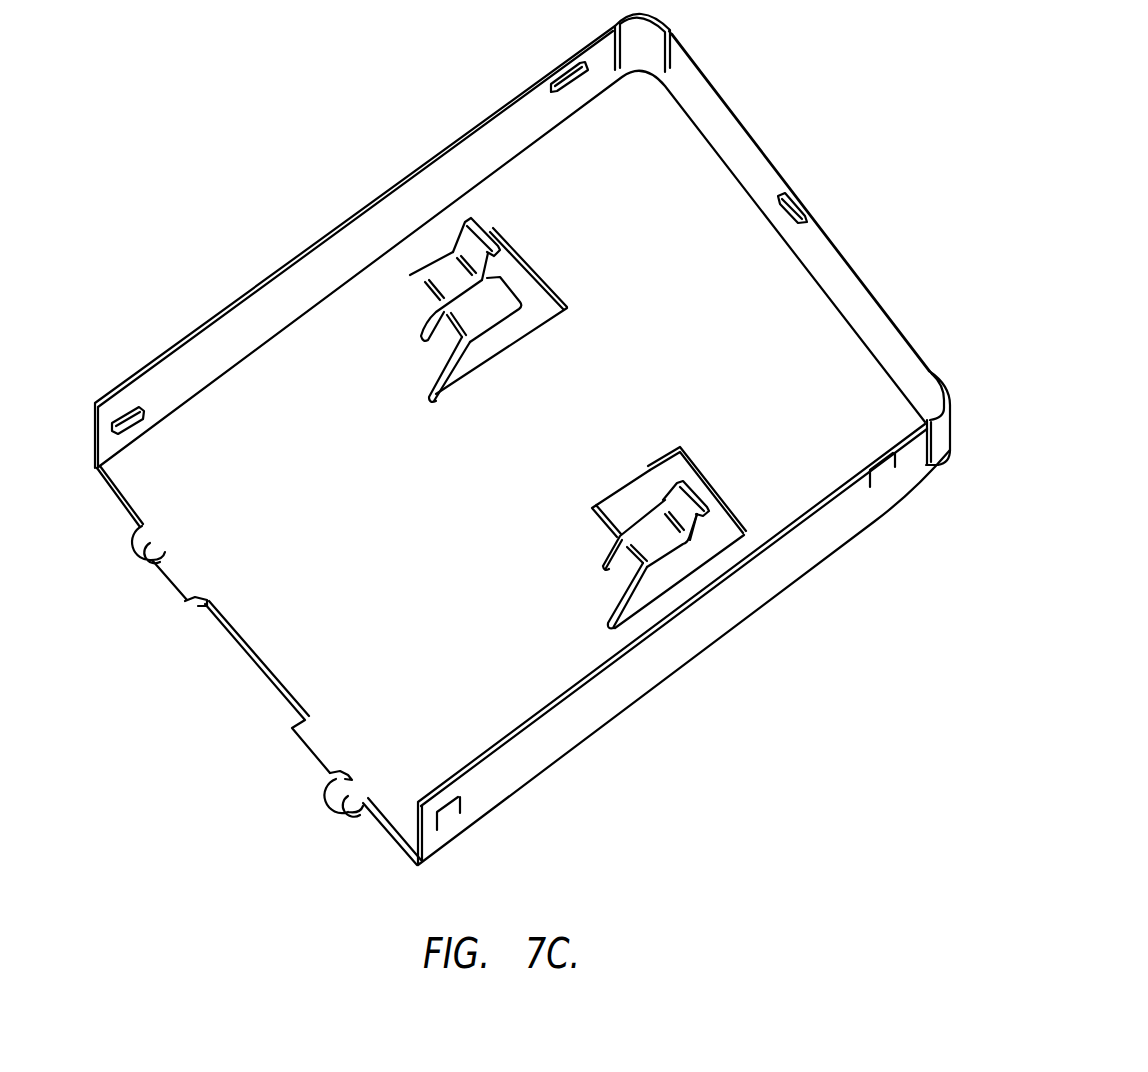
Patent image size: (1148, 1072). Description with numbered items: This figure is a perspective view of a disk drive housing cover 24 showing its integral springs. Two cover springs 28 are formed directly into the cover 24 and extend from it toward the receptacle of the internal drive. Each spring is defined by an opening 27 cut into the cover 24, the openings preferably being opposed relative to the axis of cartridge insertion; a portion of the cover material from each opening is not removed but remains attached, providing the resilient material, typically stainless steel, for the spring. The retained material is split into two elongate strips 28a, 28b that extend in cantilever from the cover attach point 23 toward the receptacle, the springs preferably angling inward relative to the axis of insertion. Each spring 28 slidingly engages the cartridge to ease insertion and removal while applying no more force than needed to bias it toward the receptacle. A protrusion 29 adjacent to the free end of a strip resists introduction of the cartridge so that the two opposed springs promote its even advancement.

The cover attach point 23 is at (433, 392).
The disk drive cover 24 is at (340, 577).
The openings 27 is at (530, 280).
The cover springs 28 is at (545, 377).
The elongate strip 28a is at (420, 300).
The elongate strip 28b is at (447, 337).
The protrusion 29 is at (483, 222).